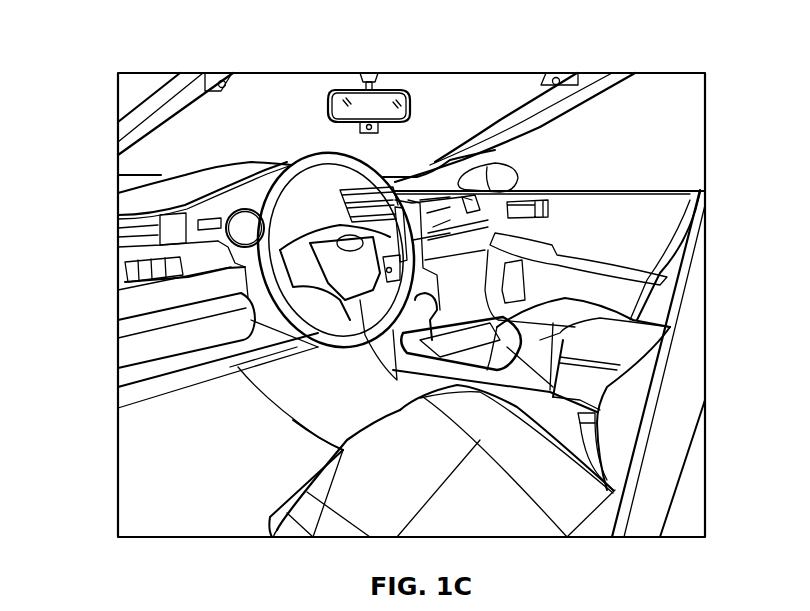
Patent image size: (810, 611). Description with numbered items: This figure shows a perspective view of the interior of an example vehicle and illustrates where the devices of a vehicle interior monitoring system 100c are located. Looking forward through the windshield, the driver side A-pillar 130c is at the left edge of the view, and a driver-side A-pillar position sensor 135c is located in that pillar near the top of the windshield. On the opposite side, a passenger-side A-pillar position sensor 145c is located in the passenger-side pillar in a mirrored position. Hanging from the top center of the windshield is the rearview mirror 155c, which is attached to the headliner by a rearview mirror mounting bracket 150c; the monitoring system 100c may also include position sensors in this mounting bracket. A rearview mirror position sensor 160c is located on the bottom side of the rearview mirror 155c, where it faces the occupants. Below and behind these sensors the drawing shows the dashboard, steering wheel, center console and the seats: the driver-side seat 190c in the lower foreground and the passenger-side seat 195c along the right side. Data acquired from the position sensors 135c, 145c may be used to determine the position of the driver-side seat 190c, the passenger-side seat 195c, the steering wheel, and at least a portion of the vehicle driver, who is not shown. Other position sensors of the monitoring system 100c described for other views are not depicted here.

The vehicle interior monitoring system 100c is at (96, 32).
The driver side A-pillar 130c is at (155, 105).
The driver-side A-pillar position sensor 135c is at (235, 92).
The passenger-side A-pillar position sensor 145c is at (565, 78).
The rearview mirror mounting bracket 150c is at (369, 73).
The rearview mirror 155c is at (382, 105).
The rearview mirror position sensor 160c is at (380, 134).
The driver-side seat 190c is at (503, 507).
The passenger-side seat 195c is at (672, 262).